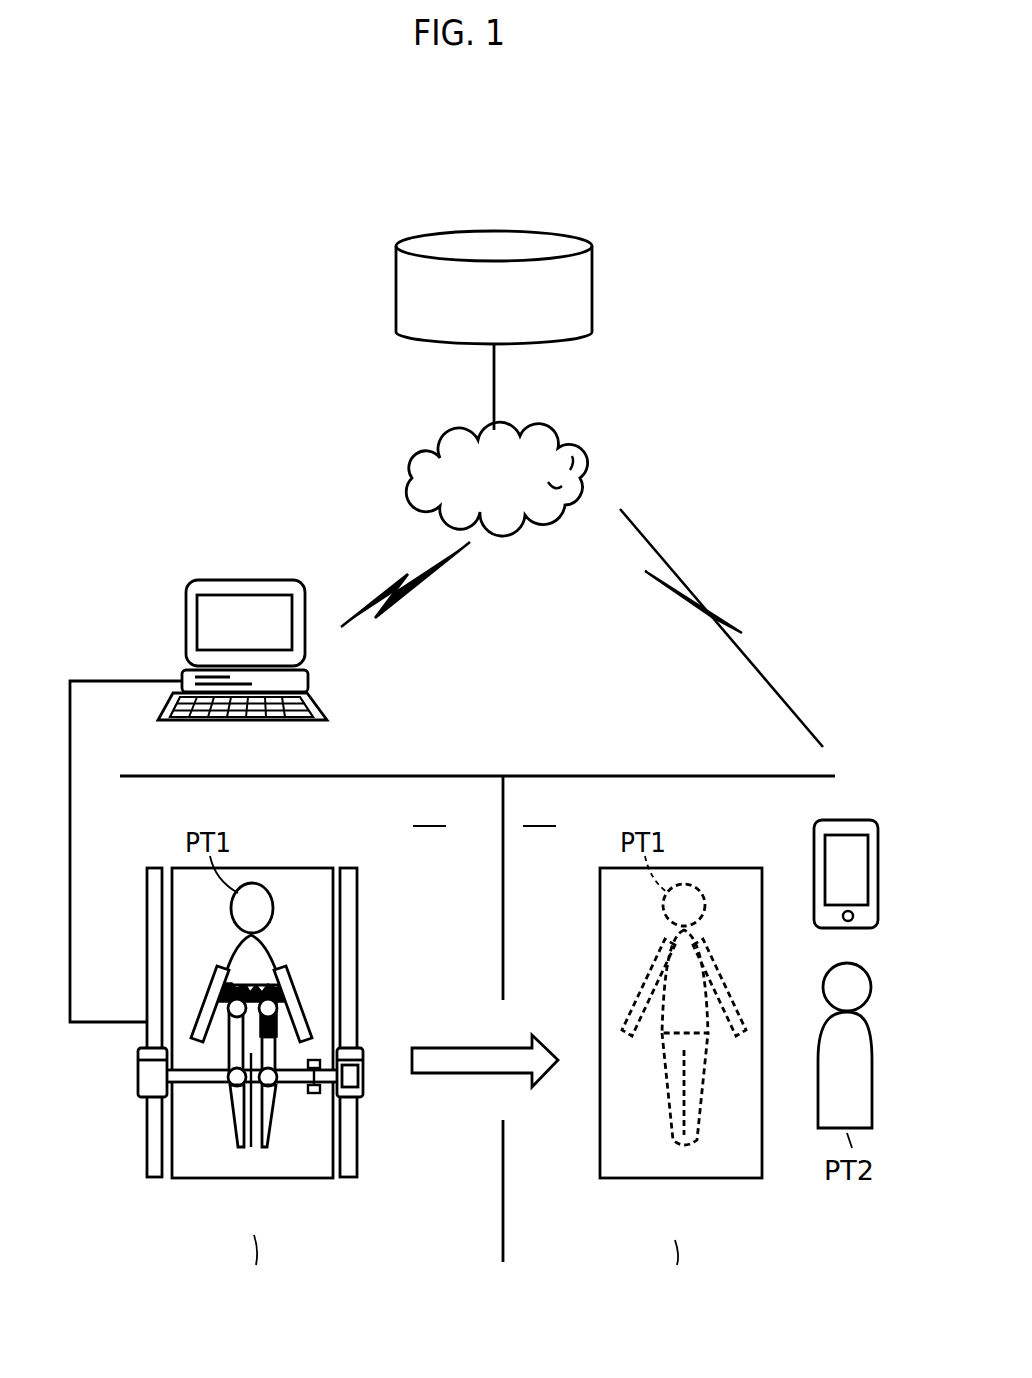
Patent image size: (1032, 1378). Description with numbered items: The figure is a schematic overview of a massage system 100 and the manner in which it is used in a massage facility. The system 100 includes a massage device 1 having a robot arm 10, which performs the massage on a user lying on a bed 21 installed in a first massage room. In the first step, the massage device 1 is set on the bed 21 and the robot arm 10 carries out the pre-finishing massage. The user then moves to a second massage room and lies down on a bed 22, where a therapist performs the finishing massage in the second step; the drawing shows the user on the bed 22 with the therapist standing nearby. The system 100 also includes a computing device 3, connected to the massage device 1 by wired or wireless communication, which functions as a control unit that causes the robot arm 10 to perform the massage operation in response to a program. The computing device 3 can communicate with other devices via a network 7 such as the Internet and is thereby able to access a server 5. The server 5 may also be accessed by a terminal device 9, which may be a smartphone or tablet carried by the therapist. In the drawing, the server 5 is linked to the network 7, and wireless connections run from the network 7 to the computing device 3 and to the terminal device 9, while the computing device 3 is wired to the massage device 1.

The massage system 100 is at (290, 432).
The massage device 1 is at (365, 1192).
The computing device 3 is at (196, 580).
The server 5 is at (570, 235).
The network 7 is at (577, 451).
The terminal device 9 is at (857, 820).
The robot arm 10 is at (277, 1045).
The bed 21 is at (312, 868).
The bed 22 is at (735, 868).